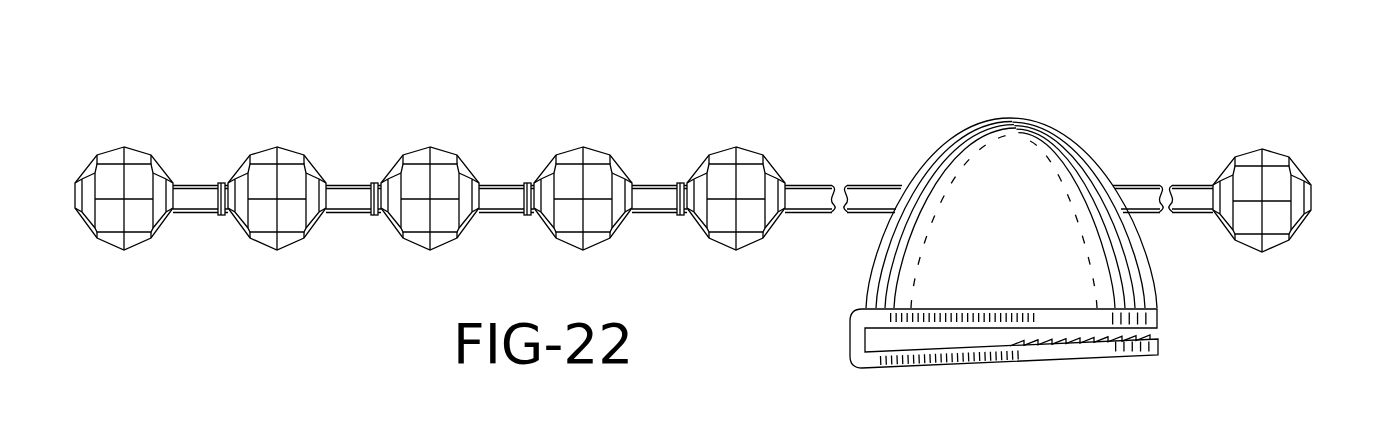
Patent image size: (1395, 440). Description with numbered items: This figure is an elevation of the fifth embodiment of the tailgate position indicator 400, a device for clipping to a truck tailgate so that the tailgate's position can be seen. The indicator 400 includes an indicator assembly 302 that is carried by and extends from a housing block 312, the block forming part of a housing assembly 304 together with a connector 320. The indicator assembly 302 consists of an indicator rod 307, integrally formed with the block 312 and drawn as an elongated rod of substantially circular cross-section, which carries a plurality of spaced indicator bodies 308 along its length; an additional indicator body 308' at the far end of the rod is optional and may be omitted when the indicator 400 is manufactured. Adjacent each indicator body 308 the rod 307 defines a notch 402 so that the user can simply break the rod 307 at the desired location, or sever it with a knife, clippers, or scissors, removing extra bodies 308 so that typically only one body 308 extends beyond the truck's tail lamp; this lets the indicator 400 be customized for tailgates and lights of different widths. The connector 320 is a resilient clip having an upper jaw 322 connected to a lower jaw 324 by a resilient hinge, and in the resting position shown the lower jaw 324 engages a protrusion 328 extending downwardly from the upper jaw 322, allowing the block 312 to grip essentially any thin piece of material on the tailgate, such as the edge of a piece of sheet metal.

The indicator body 308 is at (456, 180).
The notch 402 is at (221, 216).
The indicator rod 307 is at (812, 185).
The indicator assembly 302 is at (1141, 185).
The second indicator body 308' is at (1292, 184).
The tailgate position indicator 400 is at (1018, 241).
The housing assembly 304 is at (868, 284).
The housing block 312 is at (1143, 291).
The connector 320 is at (962, 366).
The upper jaw 322 is at (1152, 319).
The lower jaw 324 is at (1152, 345).
The protrusion 328 is at (1074, 345).